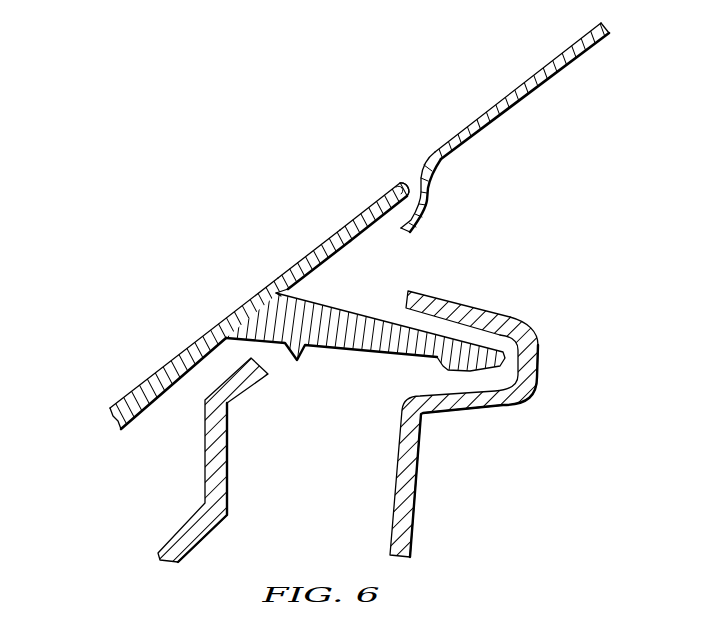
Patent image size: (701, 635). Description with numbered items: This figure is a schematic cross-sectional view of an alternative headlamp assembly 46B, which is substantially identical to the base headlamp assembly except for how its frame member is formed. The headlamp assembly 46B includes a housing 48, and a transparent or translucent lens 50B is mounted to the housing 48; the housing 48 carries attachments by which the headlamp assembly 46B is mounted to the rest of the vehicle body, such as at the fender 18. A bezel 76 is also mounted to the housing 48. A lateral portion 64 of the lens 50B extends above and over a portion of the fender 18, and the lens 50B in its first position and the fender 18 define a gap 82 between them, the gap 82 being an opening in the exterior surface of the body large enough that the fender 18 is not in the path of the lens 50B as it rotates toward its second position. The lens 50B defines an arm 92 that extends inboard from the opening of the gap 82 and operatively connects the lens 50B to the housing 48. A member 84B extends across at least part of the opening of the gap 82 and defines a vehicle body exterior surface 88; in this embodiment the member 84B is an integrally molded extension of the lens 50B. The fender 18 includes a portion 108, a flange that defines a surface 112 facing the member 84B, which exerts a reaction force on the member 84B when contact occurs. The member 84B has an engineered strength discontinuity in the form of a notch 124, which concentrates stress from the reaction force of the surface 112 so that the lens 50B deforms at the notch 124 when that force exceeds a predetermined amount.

The fender 18 is at (509, 123).
The headlamp assembly 46B is at (87, 280).
The housing 48 is at (450, 397).
The lens 50B is at (133, 388).
The lateral portion 64 is at (260, 289).
The bezel 76 is at (228, 450).
The gap 82 is at (411, 273).
The member 84B is at (325, 230).
The vehicle body exterior surface 88 is at (352, 215).
The arm 92 is at (373, 353).
The portion 108 is at (424, 211).
The surface 112 is at (400, 178).
The notch 124 is at (276, 285).